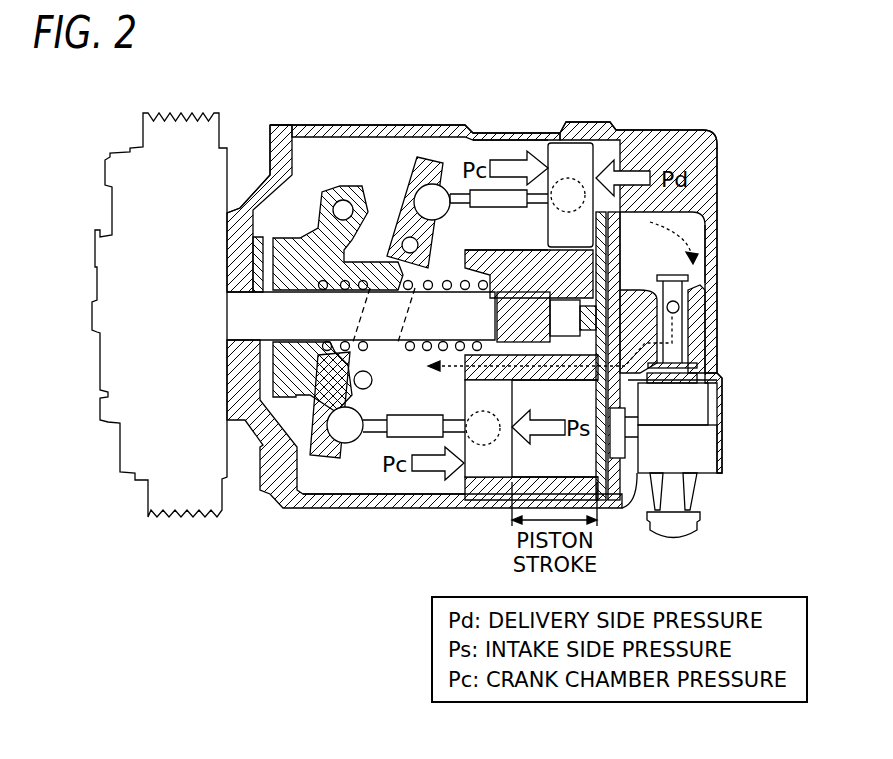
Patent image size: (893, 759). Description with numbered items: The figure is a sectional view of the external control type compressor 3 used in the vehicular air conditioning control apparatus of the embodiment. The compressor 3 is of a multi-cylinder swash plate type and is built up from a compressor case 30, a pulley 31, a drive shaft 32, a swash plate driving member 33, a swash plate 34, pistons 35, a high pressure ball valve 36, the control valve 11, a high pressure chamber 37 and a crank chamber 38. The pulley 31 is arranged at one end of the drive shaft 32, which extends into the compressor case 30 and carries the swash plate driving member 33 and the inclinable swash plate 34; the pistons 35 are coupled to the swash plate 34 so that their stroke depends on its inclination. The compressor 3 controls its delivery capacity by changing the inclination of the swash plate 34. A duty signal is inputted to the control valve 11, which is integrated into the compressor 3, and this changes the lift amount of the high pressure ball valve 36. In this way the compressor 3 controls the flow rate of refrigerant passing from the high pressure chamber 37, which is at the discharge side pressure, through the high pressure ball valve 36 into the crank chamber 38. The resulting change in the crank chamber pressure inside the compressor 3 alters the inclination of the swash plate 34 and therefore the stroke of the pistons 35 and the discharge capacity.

The external control type compressor 3 is at (474, 274).
The control valve 11 is at (700, 445).
The compressor case 30 is at (680, 129).
The pulley 31 is at (178, 137).
The drive shaft 32 is at (245, 318).
The swash plate driving member 33 is at (305, 257).
The swash plate 34 is at (382, 257).
The pistons 35 is at (578, 160).
The high pressure ball valve 36 is at (679, 307).
The high pressure chamber 37 is at (688, 232).
The crank chamber 38 is at (343, 473).